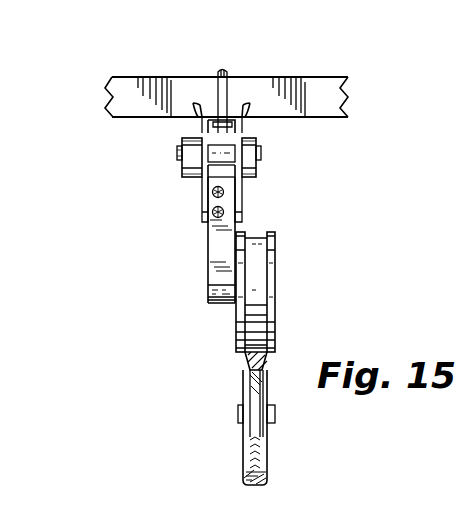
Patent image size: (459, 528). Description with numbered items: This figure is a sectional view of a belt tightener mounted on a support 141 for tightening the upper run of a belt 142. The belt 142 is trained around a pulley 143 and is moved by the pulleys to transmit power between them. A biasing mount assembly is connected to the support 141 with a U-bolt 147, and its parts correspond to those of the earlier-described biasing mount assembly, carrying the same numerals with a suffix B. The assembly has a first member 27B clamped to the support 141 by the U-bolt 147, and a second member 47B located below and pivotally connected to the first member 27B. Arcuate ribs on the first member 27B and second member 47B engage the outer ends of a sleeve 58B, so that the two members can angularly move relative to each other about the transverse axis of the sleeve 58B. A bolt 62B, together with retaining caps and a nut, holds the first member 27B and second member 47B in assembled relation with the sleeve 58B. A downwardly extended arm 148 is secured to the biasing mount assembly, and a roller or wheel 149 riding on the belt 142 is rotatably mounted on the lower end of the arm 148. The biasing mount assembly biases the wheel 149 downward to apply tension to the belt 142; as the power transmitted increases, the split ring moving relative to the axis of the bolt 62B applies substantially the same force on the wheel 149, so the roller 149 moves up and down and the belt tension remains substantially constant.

The support 141 is at (302, 84).
The U-bolt 147 is at (225, 70).
The first member 27B is at (200, 127).
The sleeve 58B is at (232, 151).
The bolt 62B is at (180, 153).
The second member 47B is at (202, 202).
The arm 148 is at (218, 248).
The roller or wheel 149 is at (276, 277).
The belt 142 is at (267, 363).
The pulley 143 is at (242, 412).